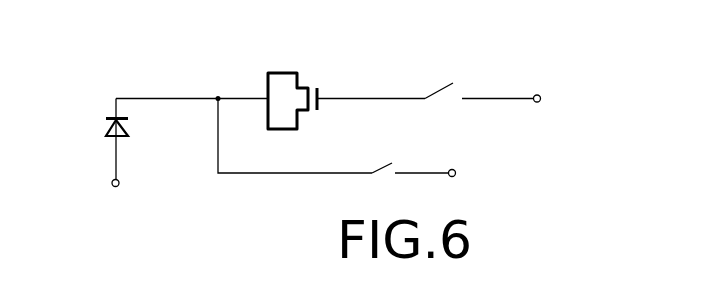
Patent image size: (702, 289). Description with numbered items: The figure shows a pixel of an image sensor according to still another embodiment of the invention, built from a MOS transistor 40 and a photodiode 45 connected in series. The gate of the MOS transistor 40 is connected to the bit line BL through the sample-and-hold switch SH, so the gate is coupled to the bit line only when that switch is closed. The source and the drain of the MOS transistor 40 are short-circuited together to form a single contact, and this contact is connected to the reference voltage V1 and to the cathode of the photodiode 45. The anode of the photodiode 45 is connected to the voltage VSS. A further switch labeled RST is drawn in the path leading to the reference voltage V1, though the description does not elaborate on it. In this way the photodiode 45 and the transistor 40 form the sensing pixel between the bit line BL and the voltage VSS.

The MOS transistor 40 is at (298, 85).
The photodiode 45 is at (110, 138).
The sample-and-hold switch SH is at (479, 68).
The reset switch RST is at (410, 150).
The bit line BL is at (564, 95).
The reference voltage V1 is at (466, 184).
The voltage VSS is at (143, 188).